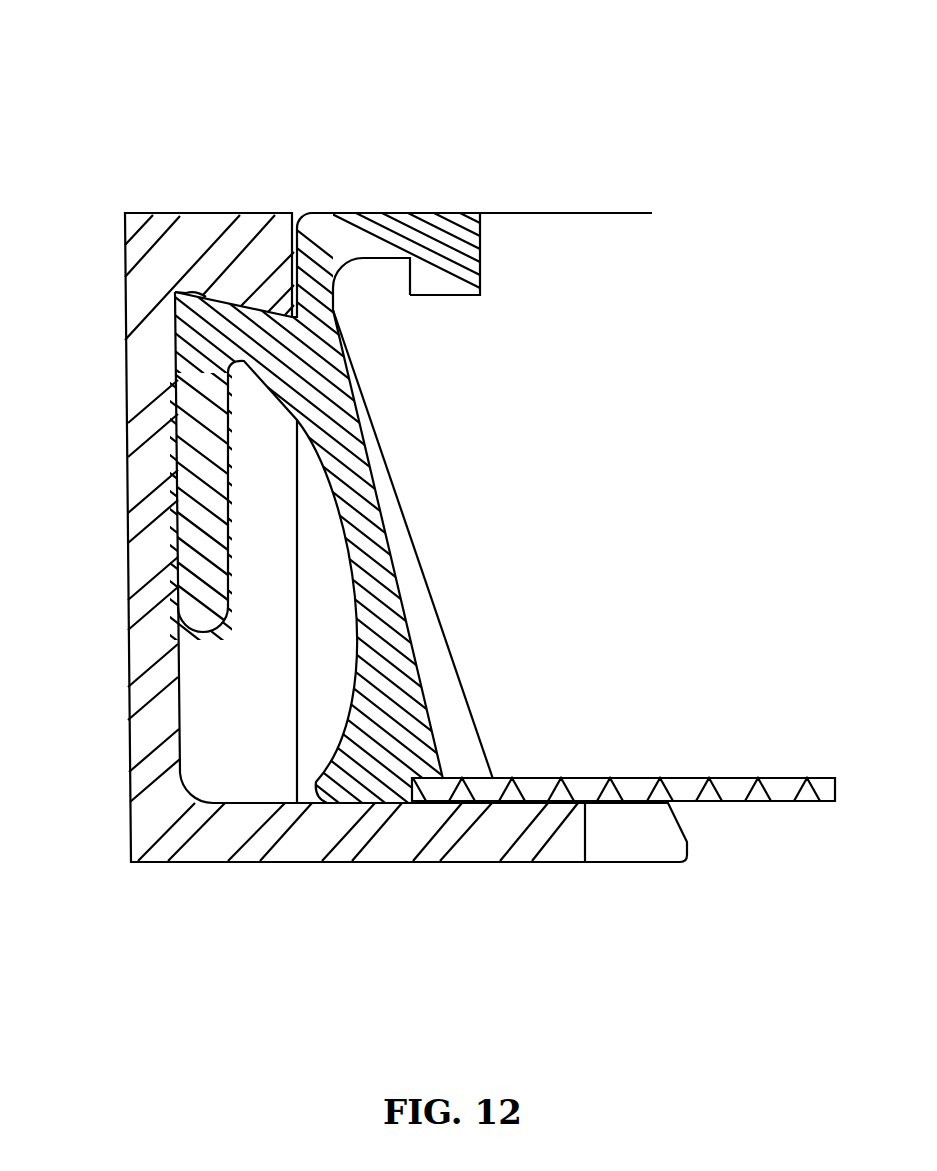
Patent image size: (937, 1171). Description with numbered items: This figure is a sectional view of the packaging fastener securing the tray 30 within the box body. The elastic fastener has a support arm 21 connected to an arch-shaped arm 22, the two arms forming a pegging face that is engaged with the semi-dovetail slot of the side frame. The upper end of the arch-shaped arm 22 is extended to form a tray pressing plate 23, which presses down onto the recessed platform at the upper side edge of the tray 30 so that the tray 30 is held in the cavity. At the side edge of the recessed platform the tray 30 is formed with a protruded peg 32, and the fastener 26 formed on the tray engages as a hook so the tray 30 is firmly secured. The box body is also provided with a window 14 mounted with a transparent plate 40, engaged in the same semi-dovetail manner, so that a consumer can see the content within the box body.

The window 14 is at (643, 833).
The support arm 21 is at (203, 500).
The arch-shaped arm 22 is at (218, 322).
The tray pressing plate 23 is at (393, 238).
The fastener 26 is at (450, 275).
The tray 30 is at (620, 210).
The protruded peg 32 is at (373, 293).
The transparent plate 40 is at (473, 788).